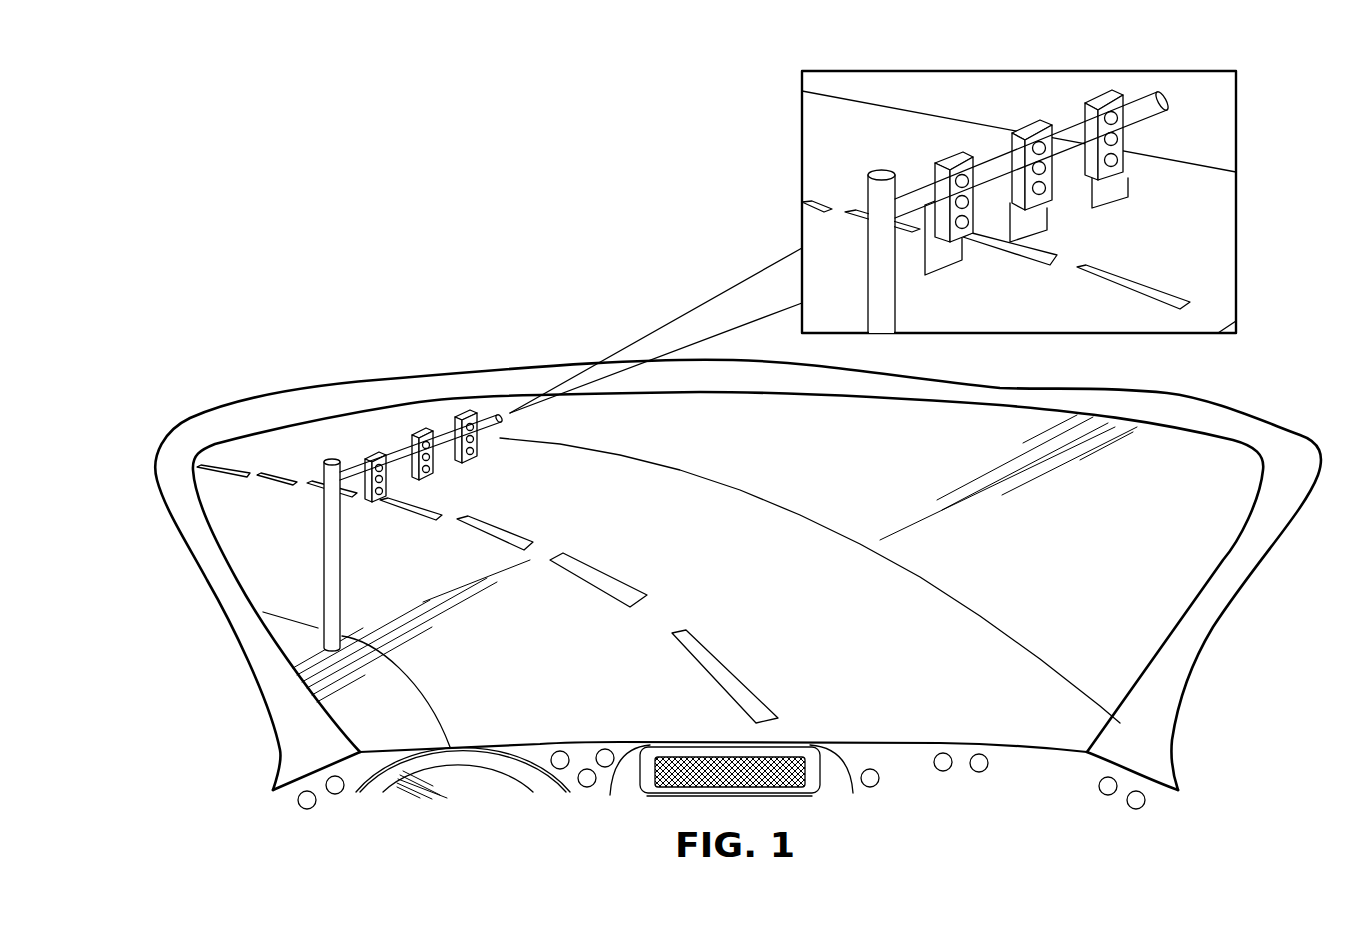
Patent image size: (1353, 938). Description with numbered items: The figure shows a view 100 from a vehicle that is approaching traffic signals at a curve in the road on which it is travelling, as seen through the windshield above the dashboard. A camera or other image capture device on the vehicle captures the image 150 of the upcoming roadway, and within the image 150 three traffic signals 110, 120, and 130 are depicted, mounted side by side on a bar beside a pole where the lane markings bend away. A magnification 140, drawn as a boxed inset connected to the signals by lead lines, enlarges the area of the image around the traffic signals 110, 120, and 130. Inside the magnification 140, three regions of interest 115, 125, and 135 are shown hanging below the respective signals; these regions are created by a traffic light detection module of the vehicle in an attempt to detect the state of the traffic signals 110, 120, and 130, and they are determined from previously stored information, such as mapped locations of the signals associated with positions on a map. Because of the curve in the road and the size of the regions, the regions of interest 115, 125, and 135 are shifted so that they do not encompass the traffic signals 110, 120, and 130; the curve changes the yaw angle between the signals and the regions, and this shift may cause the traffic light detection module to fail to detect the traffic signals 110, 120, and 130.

The view 100 is at (458, 190).
The traffic signal 110 is at (379, 453).
The region of interest 115 is at (937, 275).
The traffic signal 120 is at (426, 434).
The region of interest 125 is at (1027, 240).
The traffic signal 130 is at (470, 416).
The region of interest 135 is at (1105, 209).
The magnification 140 is at (802, 130).
The image 150 is at (1213, 629).